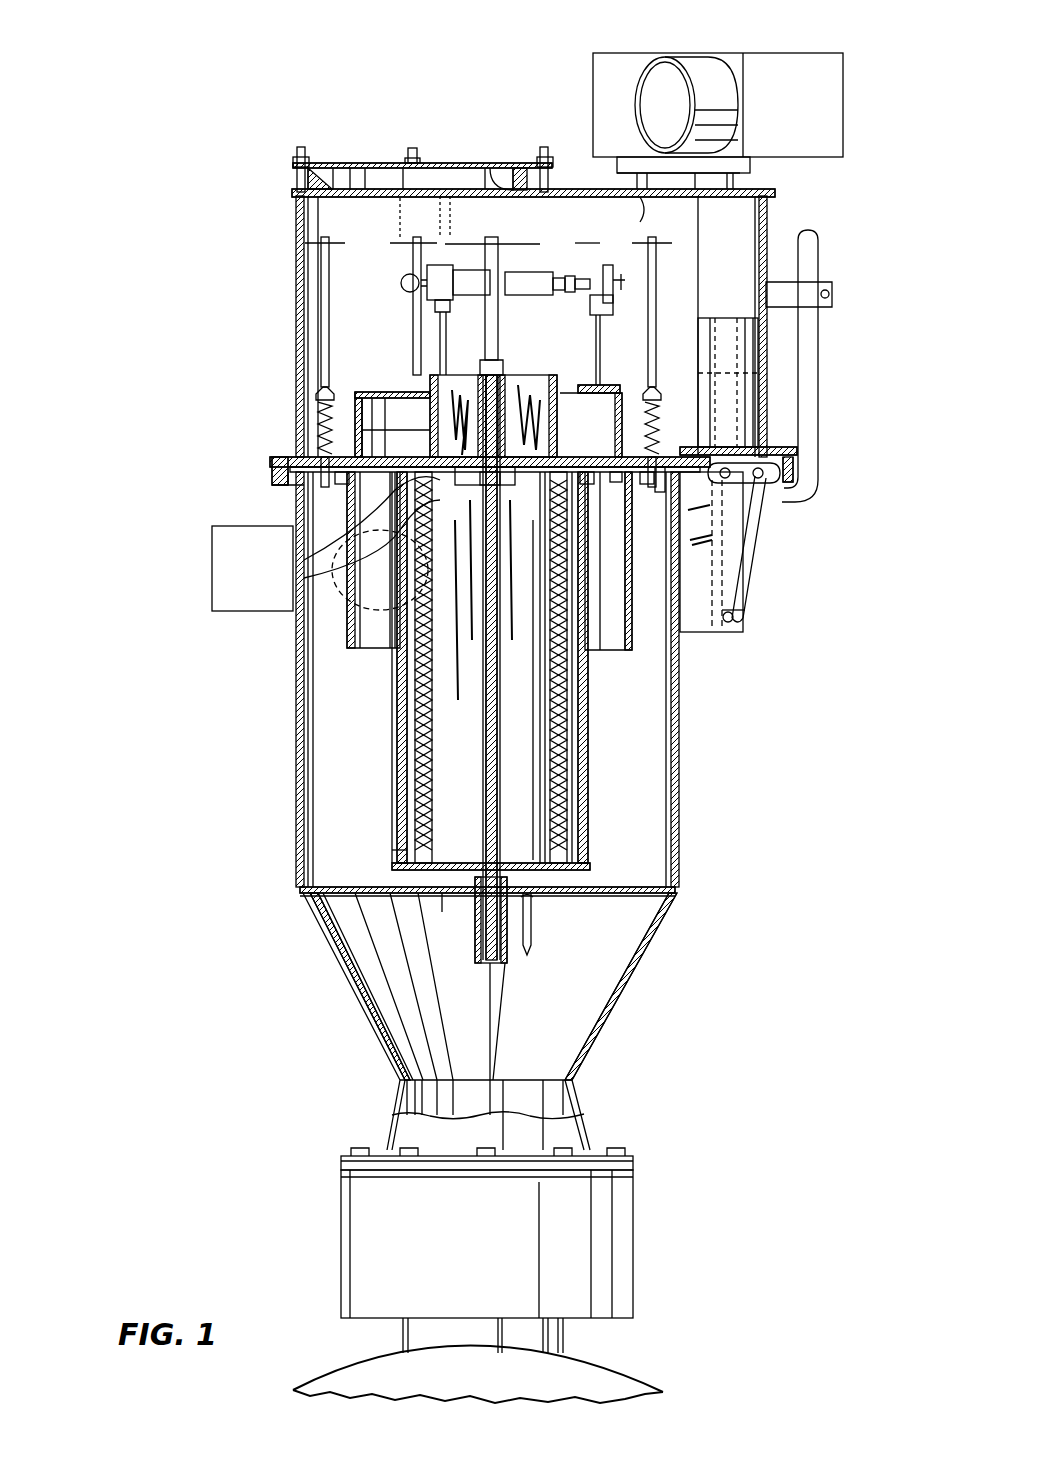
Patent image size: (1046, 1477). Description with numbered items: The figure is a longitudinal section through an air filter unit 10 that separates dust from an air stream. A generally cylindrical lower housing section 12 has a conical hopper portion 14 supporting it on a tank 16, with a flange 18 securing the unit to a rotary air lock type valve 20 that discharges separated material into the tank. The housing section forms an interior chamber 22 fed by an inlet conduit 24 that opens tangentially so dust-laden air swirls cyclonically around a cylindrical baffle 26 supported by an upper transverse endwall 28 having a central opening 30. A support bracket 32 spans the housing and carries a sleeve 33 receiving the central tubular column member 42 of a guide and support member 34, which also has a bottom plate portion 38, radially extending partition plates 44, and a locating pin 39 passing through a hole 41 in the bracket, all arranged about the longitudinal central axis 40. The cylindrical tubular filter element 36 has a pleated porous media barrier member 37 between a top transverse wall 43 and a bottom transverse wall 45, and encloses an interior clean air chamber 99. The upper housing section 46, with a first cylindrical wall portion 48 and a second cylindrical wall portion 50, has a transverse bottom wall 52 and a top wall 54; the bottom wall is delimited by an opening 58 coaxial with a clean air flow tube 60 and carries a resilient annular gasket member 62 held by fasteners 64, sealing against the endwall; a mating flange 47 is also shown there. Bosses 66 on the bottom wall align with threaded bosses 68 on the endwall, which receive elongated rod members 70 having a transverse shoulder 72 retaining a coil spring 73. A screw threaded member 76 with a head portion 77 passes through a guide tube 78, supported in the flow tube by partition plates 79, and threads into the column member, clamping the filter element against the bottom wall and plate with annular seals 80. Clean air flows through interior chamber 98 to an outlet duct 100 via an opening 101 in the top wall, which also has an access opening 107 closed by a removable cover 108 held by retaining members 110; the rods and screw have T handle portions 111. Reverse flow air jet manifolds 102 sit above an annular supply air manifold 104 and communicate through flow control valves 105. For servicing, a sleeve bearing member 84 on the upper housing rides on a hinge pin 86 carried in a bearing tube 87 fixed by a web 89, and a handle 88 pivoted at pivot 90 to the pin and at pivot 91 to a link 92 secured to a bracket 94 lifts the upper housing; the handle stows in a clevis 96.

The air filter unit 10 is at (258, 730).
The lower housing section 12 is at (296, 804).
The conical hopper portion 14 is at (318, 958).
The tank 16 is at (622, 1365).
The flange 18 is at (633, 1158).
The rotary air lock type valve 20 is at (633, 1240).
The interior chamber 22 is at (634, 762).
The inlet conduit 24 is at (250, 611).
The cylindrical shroud or baffle 26 is at (632, 600).
The upper transverse endwall 28 is at (276, 484).
The central opening 30 is at (304, 542).
The support bracket 32 is at (608, 887).
The sleeve 33 is at (475, 950).
The guide and support member 34 is at (570, 800).
The cylindrical tubular filter element 36 is at (596, 720).
The pleated porous media barrier member 37 is at (572, 782).
The bottom plate portion 38 is at (442, 905).
The locating pin 39 is at (531, 945).
The longitudinal central axis 40 is at (490, 990).
The hole 41 is at (535, 920).
The central tubular column member 42 is at (500, 670).
The top transverse wall 43 is at (304, 566).
The partition plates 44 is at (397, 696).
The bottom transverse wall 45 is at (392, 862).
The upper housing section 46 is at (298, 292).
The flange 47 is at (270, 470).
The first cylindrical wall portion 48 is at (292, 202).
The second cylindrical wall portion 50 is at (770, 208).
The transverse bottom wall 52 is at (398, 457).
The top wall 54 is at (315, 168).
The opening 58 is at (436, 478).
The clean air flow tube 60 is at (420, 372).
The resilient annular gasket member 62 is at (660, 495).
The fasteners 64 is at (614, 485).
The bosses 66 is at (318, 440).
The bosses 68 is at (300, 500).
The elongated rod members 70 is at (321, 330).
The transverse shoulder 72 is at (316, 392).
The coil spring 73 is at (318, 418).
The screw threaded member 76 is at (498, 332).
The head portion 77 is at (520, 372).
The guide tube 78 is at (510, 380).
The partition plates 79 is at (440, 422).
The annular gaskets or seals 80 is at (470, 485).
The cylindrical sleeve bearing member 84 is at (745, 394).
The hinge pin 86 is at (768, 440).
The bearing tube 87 is at (740, 612).
The handle 88 is at (820, 342).
The web 89 is at (710, 600).
The pivot 90 is at (756, 500).
The pivot 91 is at (778, 490).
The link 92 is at (752, 560).
The bracket 94 is at (730, 622).
The clevis 96 is at (812, 282).
The interior chamber 98 is at (829, 296).
The interior clean air chamber 99 is at (531, 520).
The outlet conduit or duct 100 is at (720, 124).
The opening 101 is at (662, 197).
The reverse flow air jet manifolds 102 is at (474, 228).
The annular supply air manifold 104 is at (352, 440).
The flow control valves 105 is at (427, 272).
The opening 107 is at (502, 168).
The removable cover 108 is at (428, 160).
The retaining members 110 is at (301, 147).
The T handle portion 111 is at (322, 243).